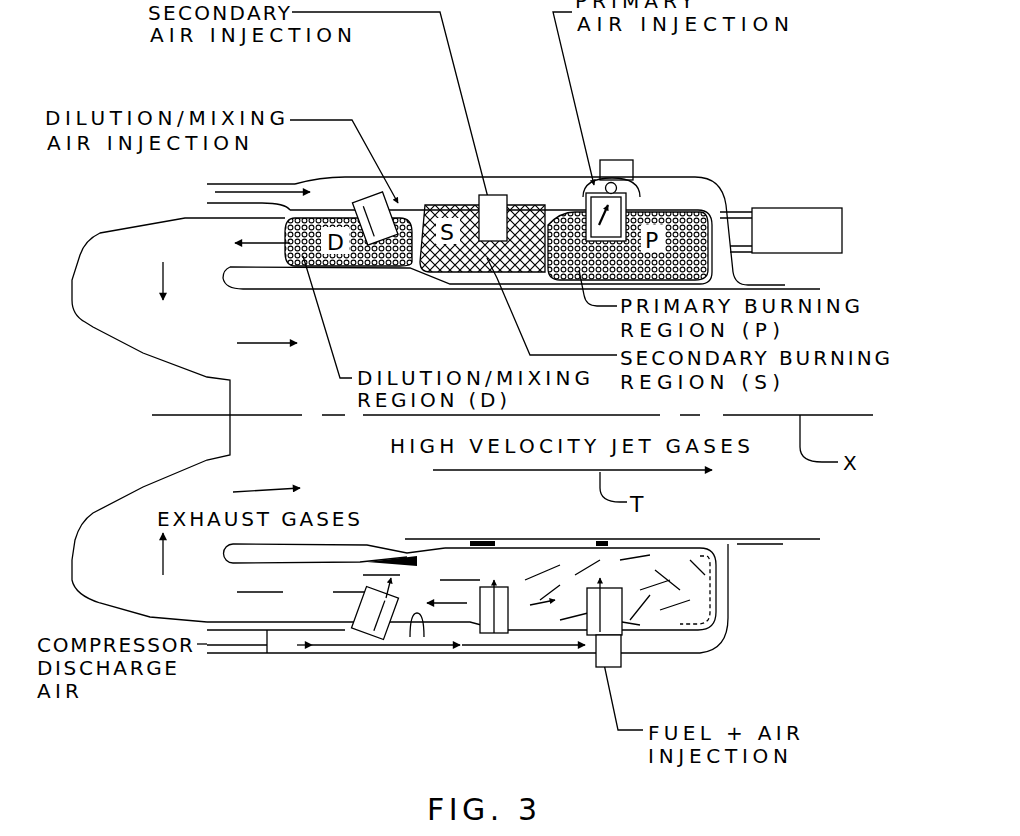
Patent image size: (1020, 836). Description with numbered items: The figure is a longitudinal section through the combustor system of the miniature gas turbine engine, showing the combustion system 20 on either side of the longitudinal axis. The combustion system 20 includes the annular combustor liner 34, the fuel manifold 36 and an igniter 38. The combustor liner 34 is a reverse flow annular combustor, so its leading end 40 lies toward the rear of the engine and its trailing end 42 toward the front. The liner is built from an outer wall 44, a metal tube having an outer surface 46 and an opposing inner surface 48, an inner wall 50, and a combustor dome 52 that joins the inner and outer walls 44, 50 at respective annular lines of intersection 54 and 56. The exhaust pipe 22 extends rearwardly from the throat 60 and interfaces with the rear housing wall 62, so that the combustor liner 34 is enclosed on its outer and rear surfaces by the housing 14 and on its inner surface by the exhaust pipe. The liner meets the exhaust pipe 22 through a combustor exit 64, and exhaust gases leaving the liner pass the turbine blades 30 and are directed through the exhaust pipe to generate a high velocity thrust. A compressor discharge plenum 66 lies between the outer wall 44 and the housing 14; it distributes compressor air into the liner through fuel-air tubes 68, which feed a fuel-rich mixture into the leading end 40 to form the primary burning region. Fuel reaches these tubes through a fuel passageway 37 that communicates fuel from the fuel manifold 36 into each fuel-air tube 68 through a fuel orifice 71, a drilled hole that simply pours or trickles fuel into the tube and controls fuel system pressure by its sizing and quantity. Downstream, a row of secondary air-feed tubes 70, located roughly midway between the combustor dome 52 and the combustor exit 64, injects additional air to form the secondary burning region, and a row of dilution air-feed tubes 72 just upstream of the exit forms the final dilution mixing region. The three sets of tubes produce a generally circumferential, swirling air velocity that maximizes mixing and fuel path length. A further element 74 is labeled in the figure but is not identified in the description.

The housing 14 is at (413, 175).
The combustion system 20 is at (510, 188).
The exhaust pipe 22 is at (808, 528).
The turbine blades 30 is at (113, 427).
The annular combustor liner 34 is at (552, 275).
The fuel manifold 36 is at (616, 172).
The fuel passageway 37 is at (625, 185).
The igniter 38 is at (800, 231).
The leading end 40 is at (706, 175).
The trailing end 42 is at (407, 272).
The outer wall 44 is at (445, 650).
The outer surface 46 is at (466, 638).
The inner surface 48 is at (405, 628).
The inner wall 50 is at (545, 558).
The combustor dome 52 is at (726, 598).
The annular line of intersection 54 is at (686, 540).
The annular line of intersection 56 is at (700, 643).
The throat 60 is at (230, 283).
The rear housing wall 62 is at (748, 284).
The combustor exit 64 is at (206, 268).
The compressor discharge plenum 66 is at (332, 657).
The fuel-air tubes 68 is at (665, 650).
The secondary air-feed tubes 70 is at (483, 540).
The fuel orifice 71 is at (590, 192).
The dilution air-feed tubes 72 is at (362, 640).
The air flow passage 74 is at (365, 612).